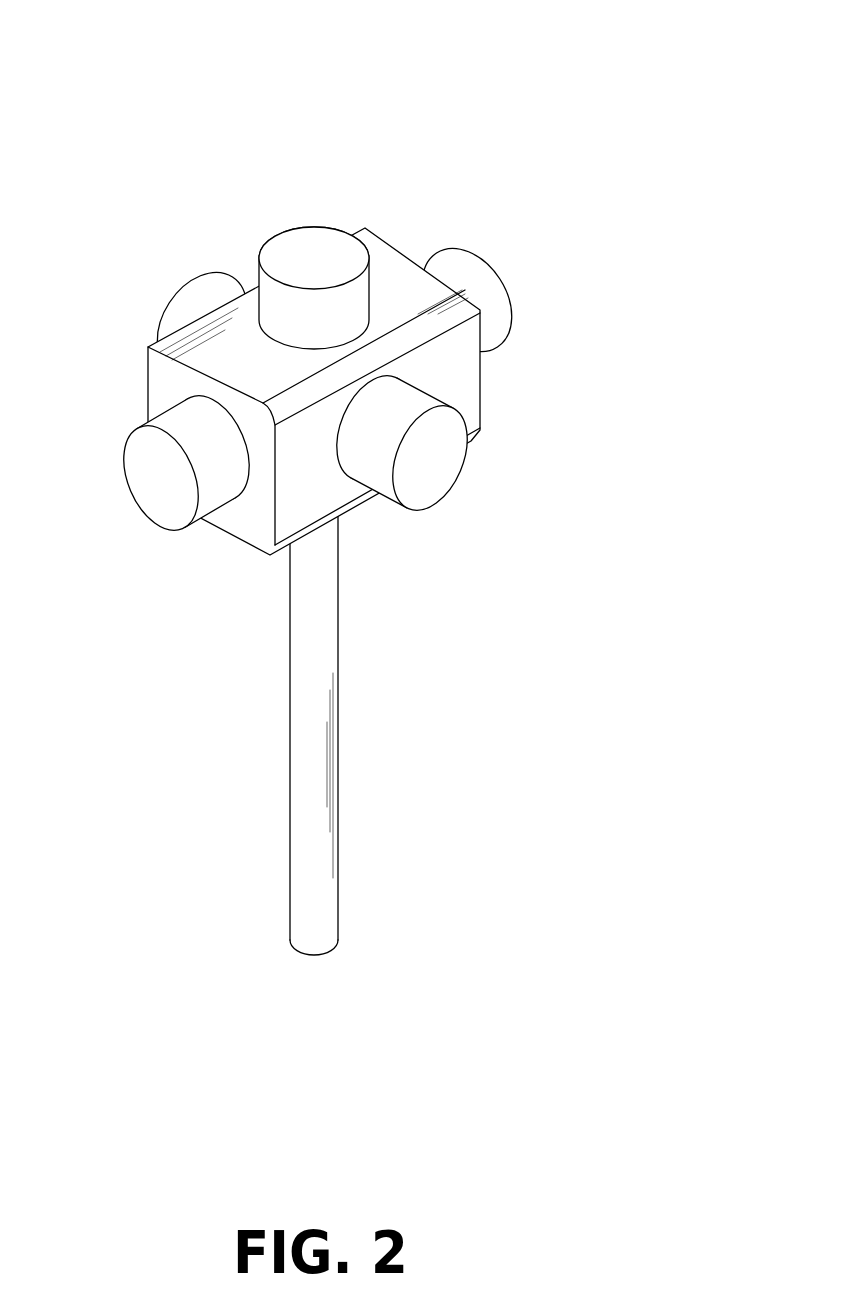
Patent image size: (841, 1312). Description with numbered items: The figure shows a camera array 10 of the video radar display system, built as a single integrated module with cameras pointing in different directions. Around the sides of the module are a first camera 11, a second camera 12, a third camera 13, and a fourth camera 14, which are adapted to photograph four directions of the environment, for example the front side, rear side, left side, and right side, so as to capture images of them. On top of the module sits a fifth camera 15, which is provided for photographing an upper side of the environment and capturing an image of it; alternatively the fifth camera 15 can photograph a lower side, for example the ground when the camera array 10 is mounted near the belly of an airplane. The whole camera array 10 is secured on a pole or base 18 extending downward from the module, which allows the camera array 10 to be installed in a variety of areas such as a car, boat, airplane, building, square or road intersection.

The camera array 10 is at (660, 88).
The first camera 11 is at (158, 502).
The second camera 12 is at (475, 280).
The third camera 13 is at (453, 455).
The fourth camera 14 is at (193, 300).
The fifth camera 15 is at (318, 235).
The pole or base 18 is at (328, 737).